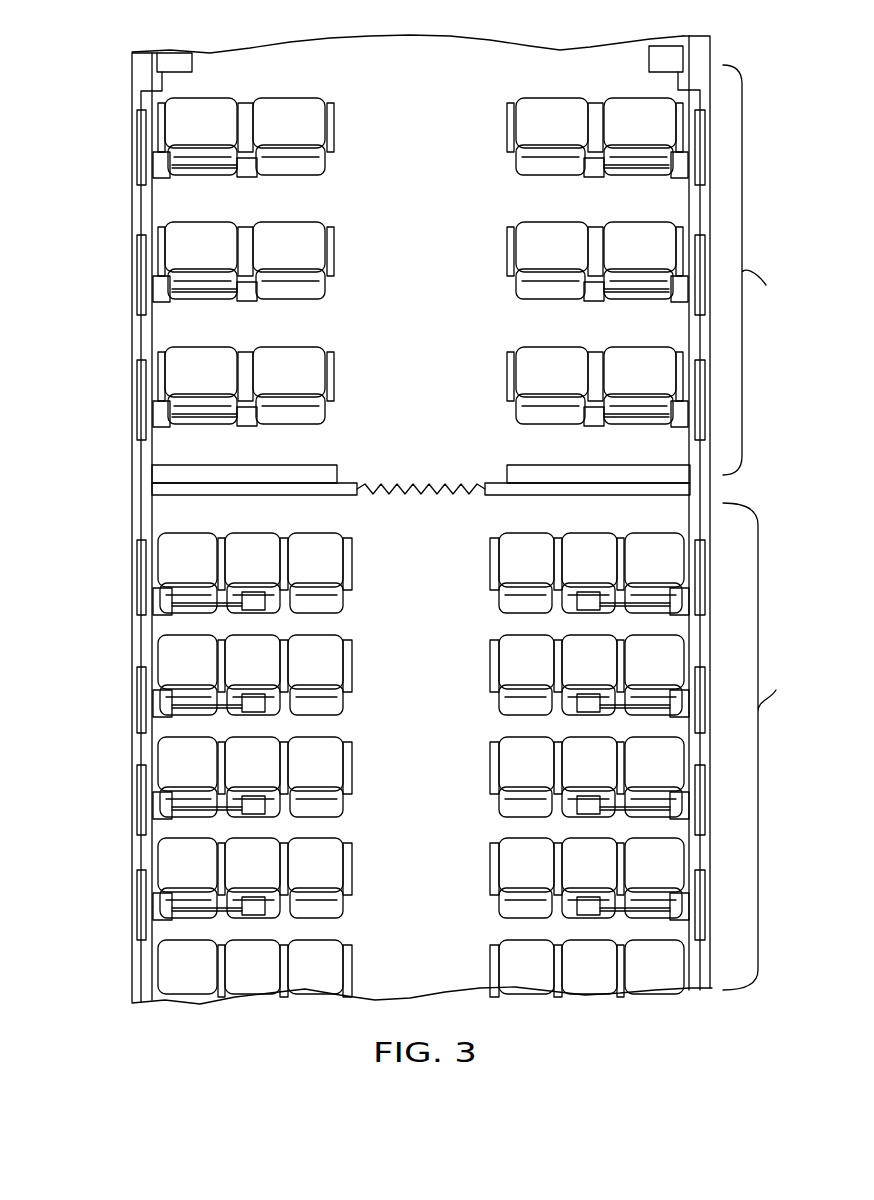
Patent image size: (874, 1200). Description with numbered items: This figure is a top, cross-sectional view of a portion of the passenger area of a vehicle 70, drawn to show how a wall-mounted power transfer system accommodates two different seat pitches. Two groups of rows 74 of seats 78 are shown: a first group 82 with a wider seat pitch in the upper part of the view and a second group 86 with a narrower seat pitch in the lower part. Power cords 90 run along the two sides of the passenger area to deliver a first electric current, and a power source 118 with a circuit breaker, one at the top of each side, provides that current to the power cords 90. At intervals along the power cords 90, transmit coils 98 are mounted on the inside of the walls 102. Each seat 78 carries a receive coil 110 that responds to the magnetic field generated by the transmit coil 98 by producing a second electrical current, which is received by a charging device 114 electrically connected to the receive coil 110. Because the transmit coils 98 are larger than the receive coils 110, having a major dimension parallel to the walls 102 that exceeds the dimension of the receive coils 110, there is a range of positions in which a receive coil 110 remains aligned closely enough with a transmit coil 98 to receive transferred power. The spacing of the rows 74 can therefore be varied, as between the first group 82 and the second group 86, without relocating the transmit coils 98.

The vehicle 70 is at (84, 189).
The rows 74 is at (421, 417).
The seats 78 is at (308, 246).
The first group 82 is at (752, 270).
The second group 86 is at (760, 746).
The power cords 90 is at (150, 492).
The transmit coils 98 is at (138, 266).
The walls 102 is at (153, 330).
The receive coils 110 is at (160, 290).
The charging device 114 is at (248, 295).
The power source 118 is at (172, 62).